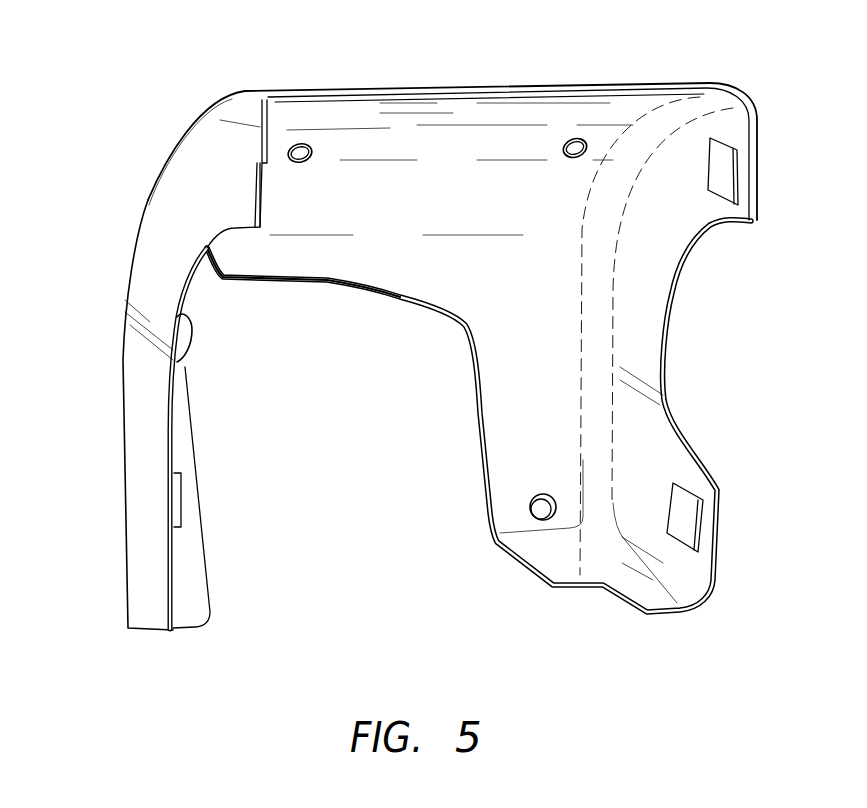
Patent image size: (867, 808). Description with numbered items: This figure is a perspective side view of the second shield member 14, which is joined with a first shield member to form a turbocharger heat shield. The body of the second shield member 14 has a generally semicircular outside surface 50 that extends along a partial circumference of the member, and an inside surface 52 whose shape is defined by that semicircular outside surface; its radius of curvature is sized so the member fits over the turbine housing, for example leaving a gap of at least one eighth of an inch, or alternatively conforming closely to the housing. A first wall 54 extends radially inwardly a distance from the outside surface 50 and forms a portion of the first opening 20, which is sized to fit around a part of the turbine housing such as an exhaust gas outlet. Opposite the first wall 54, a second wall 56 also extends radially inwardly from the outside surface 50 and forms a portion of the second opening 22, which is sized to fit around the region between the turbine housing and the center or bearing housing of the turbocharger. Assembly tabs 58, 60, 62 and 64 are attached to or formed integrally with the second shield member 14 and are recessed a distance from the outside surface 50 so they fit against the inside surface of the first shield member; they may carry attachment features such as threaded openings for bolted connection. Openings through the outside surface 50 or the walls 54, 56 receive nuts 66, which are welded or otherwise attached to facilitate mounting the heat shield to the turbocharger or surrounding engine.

The second shield member 14 is at (178, 215).
The first opening 20 is at (688, 445).
The second opening 22 is at (190, 333).
The outside surface 50 is at (202, 105).
The inside surface 52 is at (568, 190).
The first wall 54 is at (658, 286).
The second wall 56 is at (163, 253).
The tab 58 is at (727, 175).
The tab 60 is at (692, 519).
The tab 62 is at (262, 192).
The tab 64 is at (181, 500).
The nuts 66 is at (318, 156).